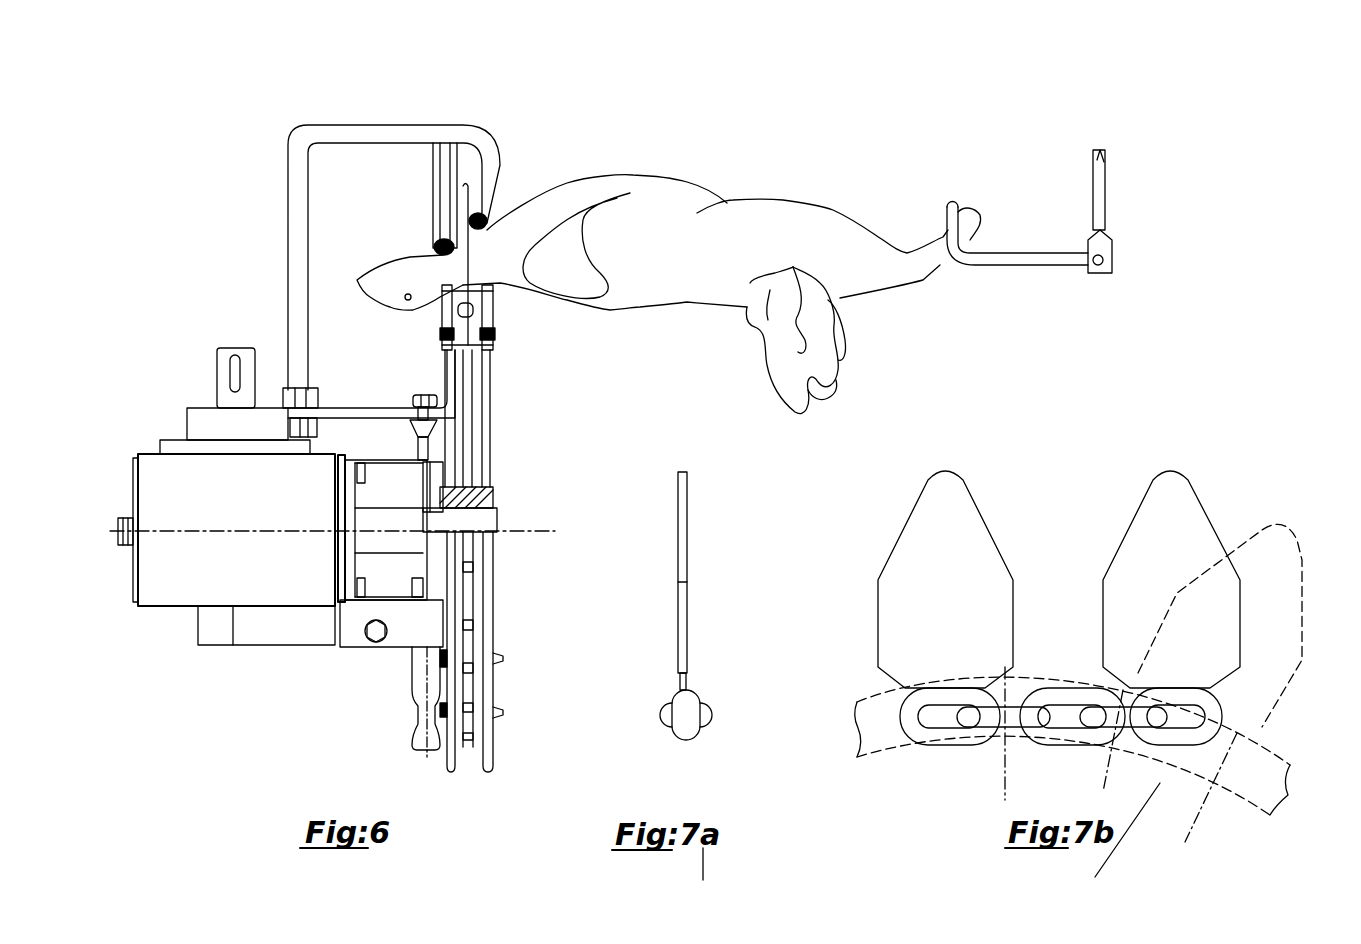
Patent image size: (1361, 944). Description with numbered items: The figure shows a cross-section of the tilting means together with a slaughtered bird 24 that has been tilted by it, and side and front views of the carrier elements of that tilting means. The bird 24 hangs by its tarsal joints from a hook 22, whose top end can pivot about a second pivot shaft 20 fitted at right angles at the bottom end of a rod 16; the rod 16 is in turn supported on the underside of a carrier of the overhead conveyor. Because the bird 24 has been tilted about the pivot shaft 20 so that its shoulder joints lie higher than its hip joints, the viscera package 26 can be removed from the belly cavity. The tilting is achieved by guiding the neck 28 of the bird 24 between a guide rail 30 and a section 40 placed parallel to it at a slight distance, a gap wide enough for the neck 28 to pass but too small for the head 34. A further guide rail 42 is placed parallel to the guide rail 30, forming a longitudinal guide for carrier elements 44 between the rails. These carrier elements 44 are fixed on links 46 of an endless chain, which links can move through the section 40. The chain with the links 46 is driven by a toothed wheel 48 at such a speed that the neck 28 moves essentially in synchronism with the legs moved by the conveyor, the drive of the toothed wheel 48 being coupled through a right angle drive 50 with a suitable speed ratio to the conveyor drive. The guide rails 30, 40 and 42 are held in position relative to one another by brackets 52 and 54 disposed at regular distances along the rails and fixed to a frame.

In FIG. 6, the rod 16 is at (1100, 180).
In FIG. 6, the second pivot shaft 20 is at (1112, 255).
In FIG. 6, the hook 22 is at (1008, 258).
In FIG. 6, the slaughtered bird 24 is at (613, 152).
In FIG. 6, the viscera package 26 is at (840, 358).
In FIG. 6, the neck 28 is at (443, 272).
In FIG. 6, the guide rail 30 is at (437, 245).
In FIG. 6, the head 34 is at (404, 302).
In FIG. 6, the section 40 is at (495, 303).
In FIG. 6, the guide rail 42 is at (487, 217).
In FIG. 6, the carrier elements 44 is at (465, 147).
In FIG. 7B, the carrier elements 44 is at (983, 542).
In FIG. 6, the links 46 is at (468, 466).
In FIG. 7A, the links 46 is at (682, 708).
In FIG. 7B, the links 46 is at (1037, 697).
In FIG. 6, the toothed wheel 48 is at (487, 618).
In FIG. 7B, the toothed wheel 48 is at (1230, 767).
In FIG. 6, the right angle drive 50 is at (160, 475).
In FIG. 6, the bracket 52 is at (288, 183).
In FIG. 6, the bracket 54 is at (333, 410).